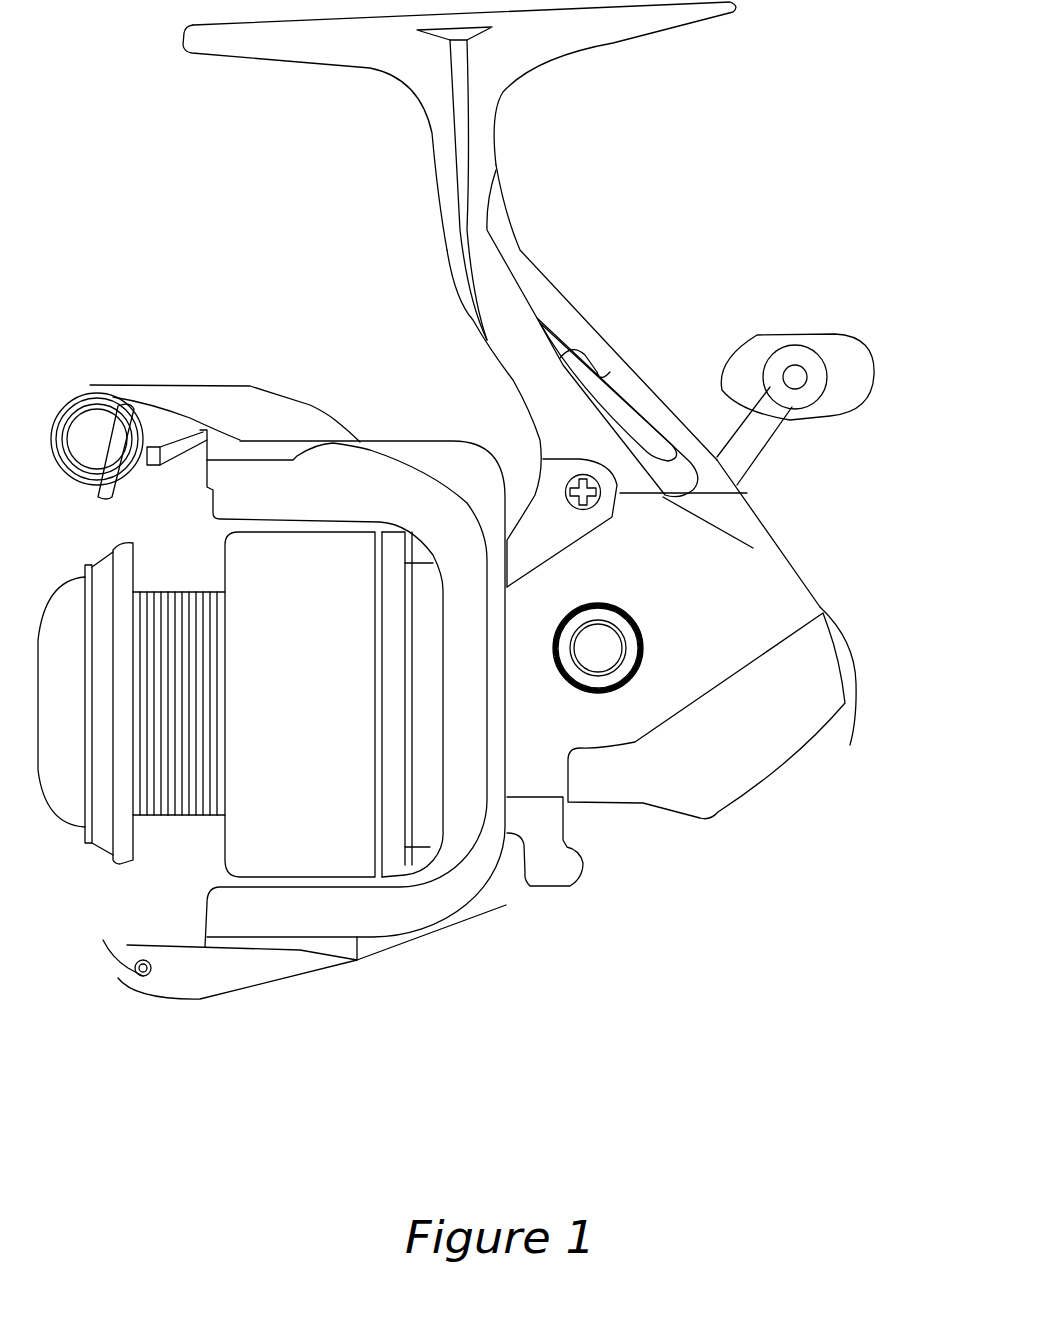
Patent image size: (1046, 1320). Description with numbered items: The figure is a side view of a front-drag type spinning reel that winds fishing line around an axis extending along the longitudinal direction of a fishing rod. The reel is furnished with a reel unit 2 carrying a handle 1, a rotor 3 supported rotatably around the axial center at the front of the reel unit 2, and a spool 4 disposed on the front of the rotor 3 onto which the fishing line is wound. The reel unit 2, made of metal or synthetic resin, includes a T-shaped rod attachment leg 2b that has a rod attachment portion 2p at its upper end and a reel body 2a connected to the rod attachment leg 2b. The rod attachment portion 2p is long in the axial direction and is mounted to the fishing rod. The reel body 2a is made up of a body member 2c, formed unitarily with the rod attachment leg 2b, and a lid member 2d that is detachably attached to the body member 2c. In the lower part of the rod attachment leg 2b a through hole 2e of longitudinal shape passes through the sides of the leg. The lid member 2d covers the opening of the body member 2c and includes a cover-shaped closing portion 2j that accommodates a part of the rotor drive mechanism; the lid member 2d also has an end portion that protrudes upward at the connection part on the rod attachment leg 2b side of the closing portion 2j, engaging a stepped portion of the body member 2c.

The handle 1 is at (760, 440).
The reel unit 2 is at (667, 421).
The reel body 2a is at (806, 557).
The rod attachment leg 2b is at (558, 323).
The body member 2c is at (500, 477).
The lid member 2d is at (787, 600).
The through hole 2e is at (603, 367).
The closing portion 2j is at (850, 745).
The rod attachment portion 2p is at (617, 45).
The rotor 3 is at (397, 480).
The spool 4 is at (178, 625).